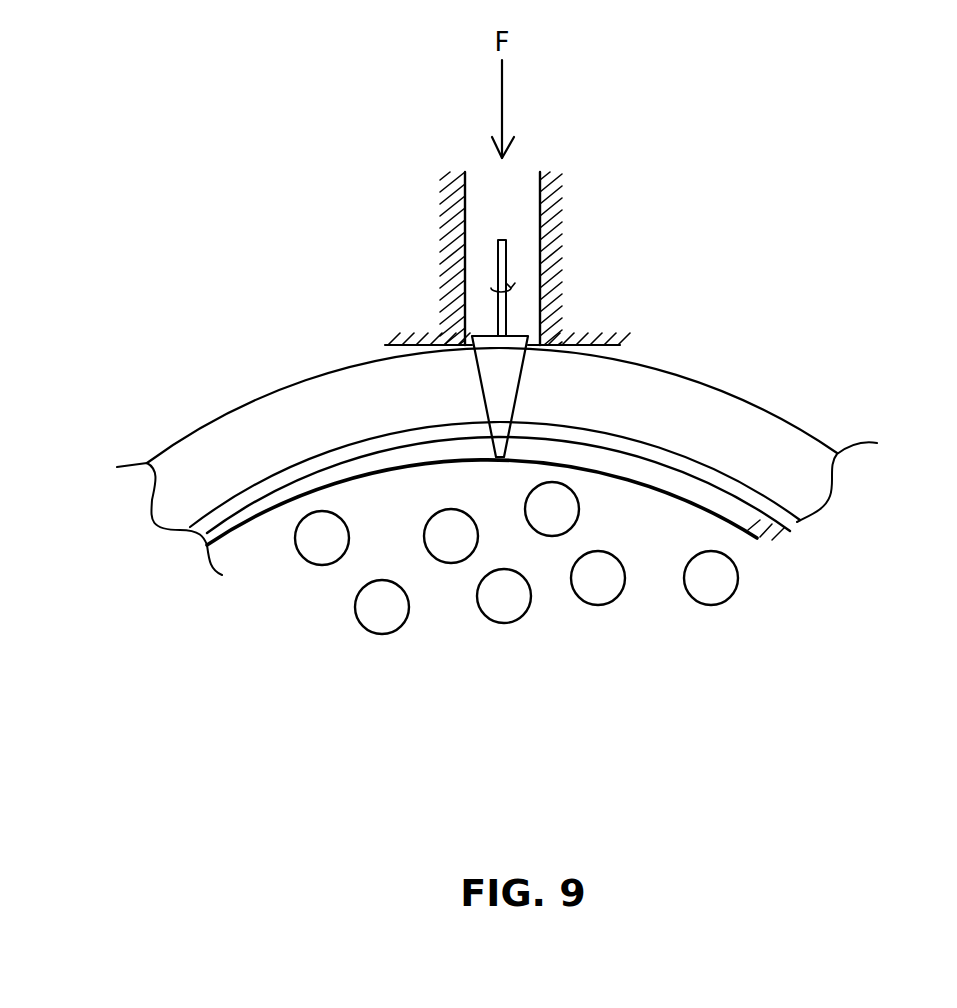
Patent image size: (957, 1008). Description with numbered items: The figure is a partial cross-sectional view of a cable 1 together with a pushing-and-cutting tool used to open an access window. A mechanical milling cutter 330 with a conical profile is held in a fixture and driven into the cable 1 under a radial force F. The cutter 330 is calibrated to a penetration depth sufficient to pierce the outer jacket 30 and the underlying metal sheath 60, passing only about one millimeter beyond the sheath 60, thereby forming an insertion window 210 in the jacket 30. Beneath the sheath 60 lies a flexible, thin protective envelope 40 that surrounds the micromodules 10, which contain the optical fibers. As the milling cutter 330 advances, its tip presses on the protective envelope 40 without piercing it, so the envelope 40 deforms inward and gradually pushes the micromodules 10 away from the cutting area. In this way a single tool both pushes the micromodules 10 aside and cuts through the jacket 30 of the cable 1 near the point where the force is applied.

The cable 1 is at (160, 415).
The micromodules 10 is at (378, 634).
The jacket 30 is at (737, 443).
The protective envelope 40 is at (757, 538).
The metal sheath 60 is at (738, 518).
The insertion window 210 is at (542, 362).
The mechanical milling cutter 330 is at (502, 392).